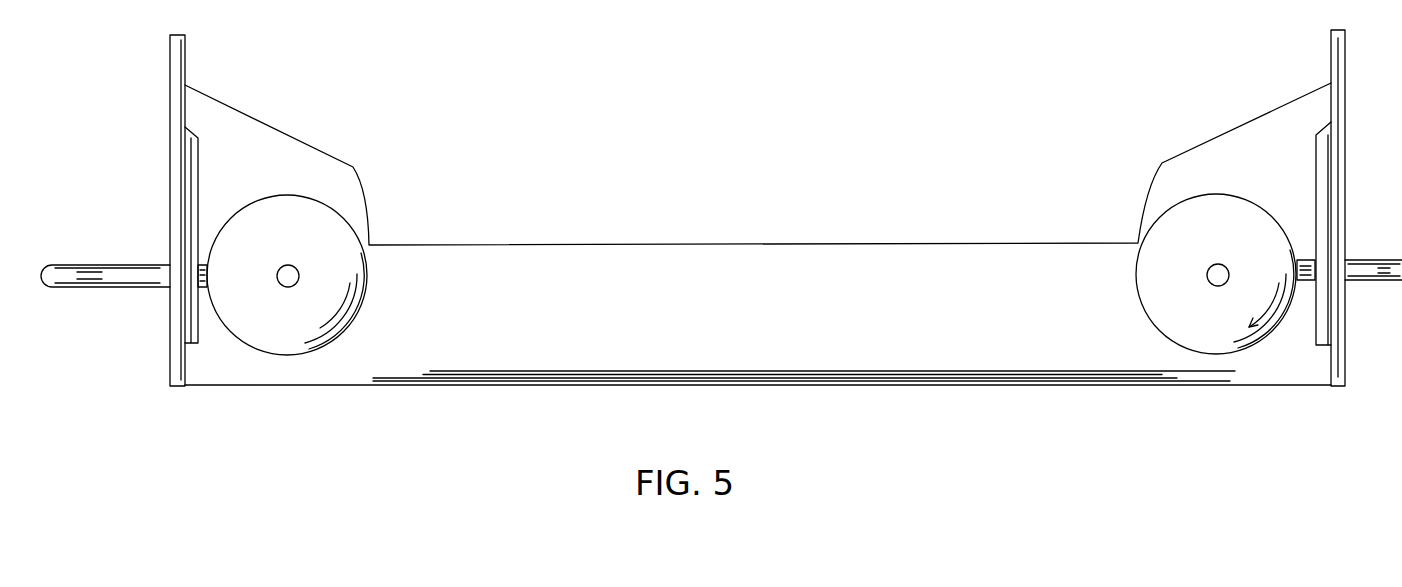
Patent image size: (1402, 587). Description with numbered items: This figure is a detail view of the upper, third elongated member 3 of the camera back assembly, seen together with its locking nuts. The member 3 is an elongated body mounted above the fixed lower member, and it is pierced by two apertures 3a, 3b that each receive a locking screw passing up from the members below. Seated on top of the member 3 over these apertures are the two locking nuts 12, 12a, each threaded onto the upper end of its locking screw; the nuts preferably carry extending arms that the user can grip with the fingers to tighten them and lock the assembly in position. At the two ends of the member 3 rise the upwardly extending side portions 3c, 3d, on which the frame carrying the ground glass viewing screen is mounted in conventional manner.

The third elongated member 3 is at (758, 247).
The aperture 3a is at (1218, 286).
The aperture 3b is at (289, 287).
The upwardly extending side portion 3c is at (170, 153).
The upwardly extending side portion 3d is at (1345, 190).
The locking nut 12 is at (1219, 194).
The locking nut 12a is at (278, 196).